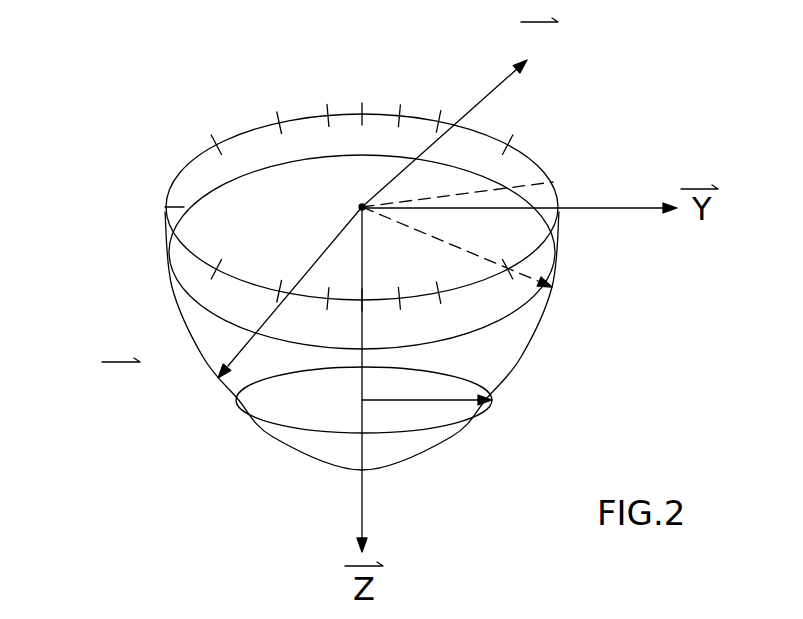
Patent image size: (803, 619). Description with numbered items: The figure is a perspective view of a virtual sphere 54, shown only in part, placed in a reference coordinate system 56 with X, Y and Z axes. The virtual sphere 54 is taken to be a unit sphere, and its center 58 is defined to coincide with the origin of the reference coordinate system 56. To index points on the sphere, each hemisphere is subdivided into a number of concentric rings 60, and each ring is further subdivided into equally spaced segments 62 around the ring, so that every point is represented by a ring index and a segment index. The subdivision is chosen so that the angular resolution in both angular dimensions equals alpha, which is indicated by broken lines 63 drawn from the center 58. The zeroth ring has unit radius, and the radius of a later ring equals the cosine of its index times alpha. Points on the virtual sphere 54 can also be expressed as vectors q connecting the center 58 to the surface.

The virtual sphere 54 is at (138, 314).
The reference coordinate system 56 is at (489, 94).
The center 58 is at (361, 206).
The concentric rings 60 is at (247, 410).
The equally spaced segments 62 is at (187, 166).
The broken lines 63 is at (518, 188).